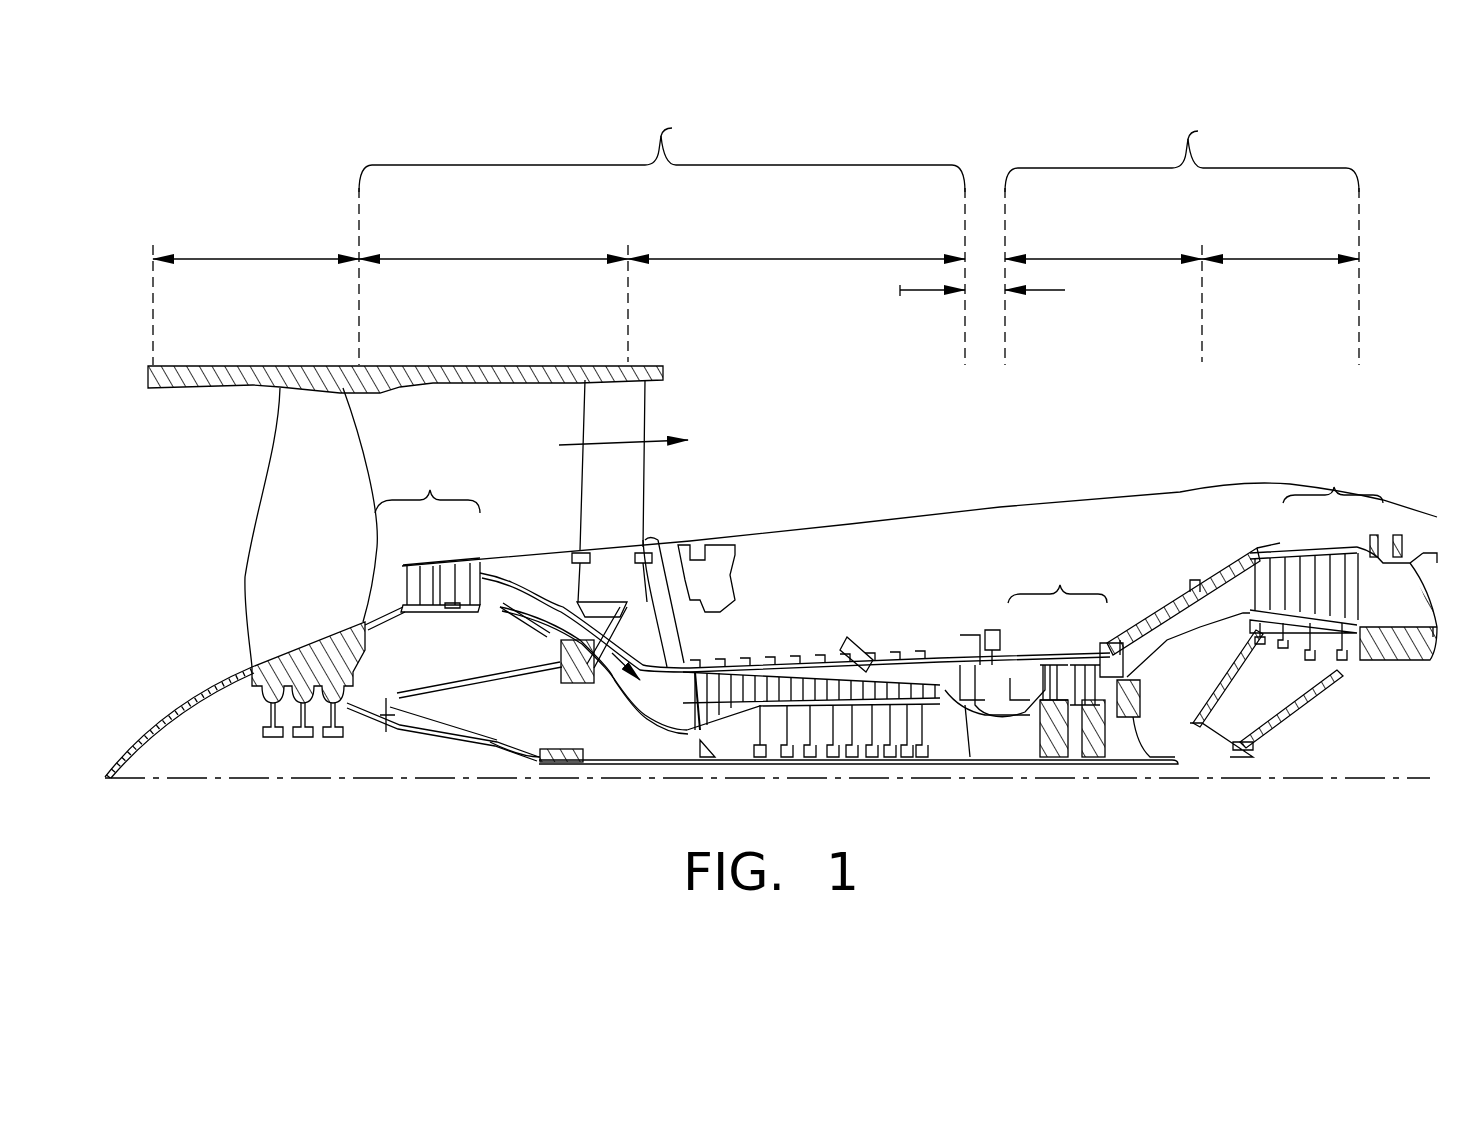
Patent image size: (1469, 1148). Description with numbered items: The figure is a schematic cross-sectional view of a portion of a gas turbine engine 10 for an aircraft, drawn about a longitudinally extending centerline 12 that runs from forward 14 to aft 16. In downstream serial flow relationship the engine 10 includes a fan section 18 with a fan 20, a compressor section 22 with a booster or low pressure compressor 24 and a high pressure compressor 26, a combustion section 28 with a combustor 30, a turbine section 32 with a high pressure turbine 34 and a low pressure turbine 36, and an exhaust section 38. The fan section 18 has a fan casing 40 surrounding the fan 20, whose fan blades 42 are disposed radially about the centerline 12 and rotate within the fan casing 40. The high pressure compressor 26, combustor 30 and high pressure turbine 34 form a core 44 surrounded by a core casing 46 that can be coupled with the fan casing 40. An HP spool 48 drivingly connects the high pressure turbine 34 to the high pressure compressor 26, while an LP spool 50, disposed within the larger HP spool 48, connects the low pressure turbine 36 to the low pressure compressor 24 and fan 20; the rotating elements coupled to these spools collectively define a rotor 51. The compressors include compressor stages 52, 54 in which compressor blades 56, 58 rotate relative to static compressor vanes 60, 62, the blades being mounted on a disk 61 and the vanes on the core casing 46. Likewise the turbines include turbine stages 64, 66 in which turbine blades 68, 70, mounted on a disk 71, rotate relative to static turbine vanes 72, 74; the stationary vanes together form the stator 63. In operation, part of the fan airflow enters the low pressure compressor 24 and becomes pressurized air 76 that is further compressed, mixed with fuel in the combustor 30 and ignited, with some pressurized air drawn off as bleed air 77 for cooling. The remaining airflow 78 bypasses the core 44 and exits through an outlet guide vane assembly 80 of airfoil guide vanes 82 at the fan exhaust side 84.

The gas turbine engine 10 is at (1378, 284).
The centerline 12 is at (233, 778).
The forward 14 is at (154, 504).
The aft 16 is at (1433, 597).
The fan section 18 is at (257, 259).
The fan 20 is at (233, 623).
The compressor section 22 is at (672, 128).
The low pressure compressor 24 is at (502, 259).
The high pressure compressor 26 is at (802, 259).
The combustion section 28 is at (912, 290).
The combustor 30 is at (1000, 640).
The turbine section 32 is at (1198, 131).
The high pressure turbine 34 is at (1102, 259).
The low pressure turbine 36 is at (1278, 259).
The exhaust section 38 is at (1420, 572).
The fan casing 40 is at (395, 365).
The fan blades 42 is at (328, 437).
The core 44 is at (928, 545).
The core casing 46 is at (1185, 585).
The HP spool 48 is at (965, 725).
The LP spool 50 is at (557, 765).
The rotor 51 is at (824, 768).
The compressor stages 52 is at (589, 641).
The compressor stages 54 is at (1015, 692).
The compressor blades 56 is at (440, 575).
The compressor blades 58 is at (727, 703).
The static compressor vanes 60 is at (420, 567).
The disk 61 is at (453, 610).
The static compressor vanes 62 is at (695, 680).
The stator 63 is at (702, 725).
The turbine stages 64 is at (1060, 627).
The turbine stages 66 is at (1336, 541).
The turbine blades 68 is at (1078, 665).
The turbine blades 70 is at (1352, 550).
The disk 71 is at (1305, 660).
The static turbine vanes 72 is at (1047, 660).
The static turbine vanes 74 is at (1325, 545).
The pressurized air 76 is at (596, 675).
The bleed air 77 is at (846, 623).
The airflow 78 is at (566, 440).
The outlet guide vane assembly 80 is at (662, 500).
The airfoil guide vanes 82 is at (590, 478).
The fan exhaust side 84 is at (664, 415).